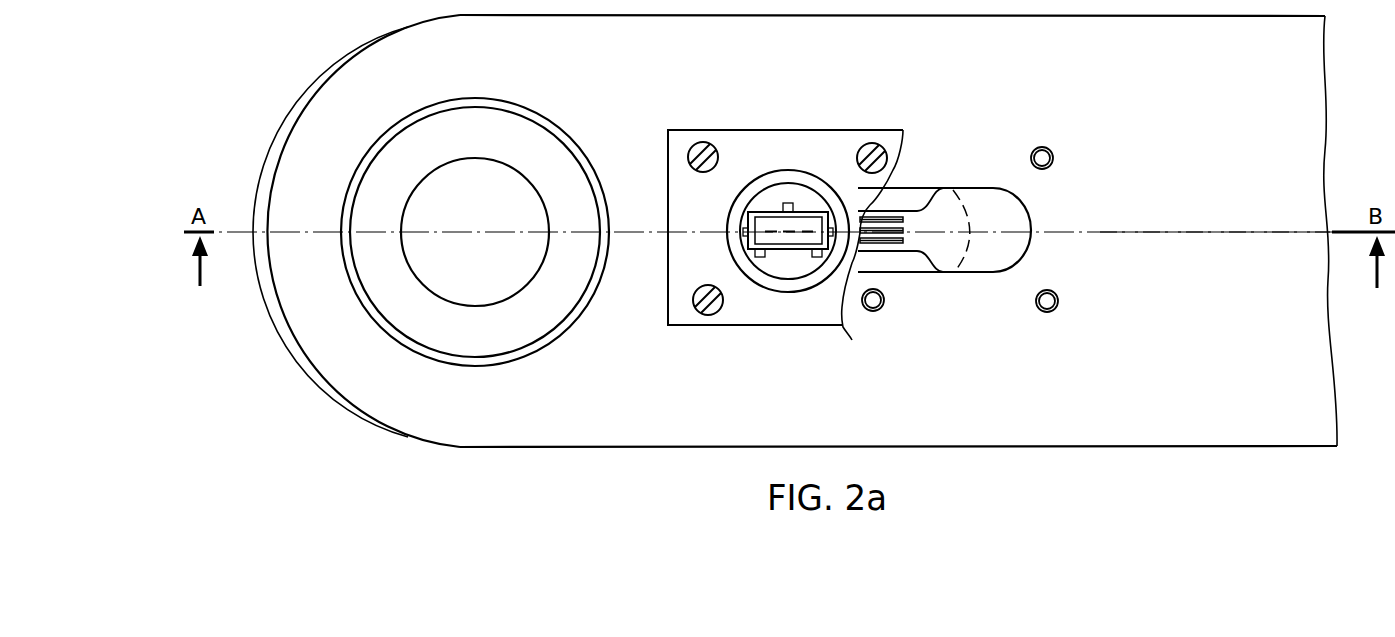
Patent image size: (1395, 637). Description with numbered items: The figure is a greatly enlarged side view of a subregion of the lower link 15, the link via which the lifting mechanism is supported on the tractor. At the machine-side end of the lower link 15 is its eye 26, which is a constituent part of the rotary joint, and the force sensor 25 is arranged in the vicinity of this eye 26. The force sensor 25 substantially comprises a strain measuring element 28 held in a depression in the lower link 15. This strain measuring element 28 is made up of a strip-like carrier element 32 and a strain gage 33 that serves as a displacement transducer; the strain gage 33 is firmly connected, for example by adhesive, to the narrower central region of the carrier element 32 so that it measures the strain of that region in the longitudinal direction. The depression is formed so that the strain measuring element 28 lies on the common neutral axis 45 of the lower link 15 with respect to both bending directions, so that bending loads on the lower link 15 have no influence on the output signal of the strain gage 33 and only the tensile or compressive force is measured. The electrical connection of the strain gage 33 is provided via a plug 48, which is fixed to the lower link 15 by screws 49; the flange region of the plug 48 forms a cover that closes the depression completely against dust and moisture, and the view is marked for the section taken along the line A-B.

The lower link 15 is at (1201, 380).
The force sensor 25 is at (1030, 132).
The eye 26 is at (437, 160).
The strain measuring element 28 is at (900, 280).
The carrier element 32 is at (942, 245).
The strain gage 33 is at (852, 340).
The neutral axis 45 is at (1229, 230).
The plug 48 is at (811, 118).
The screws 49 is at (692, 148).